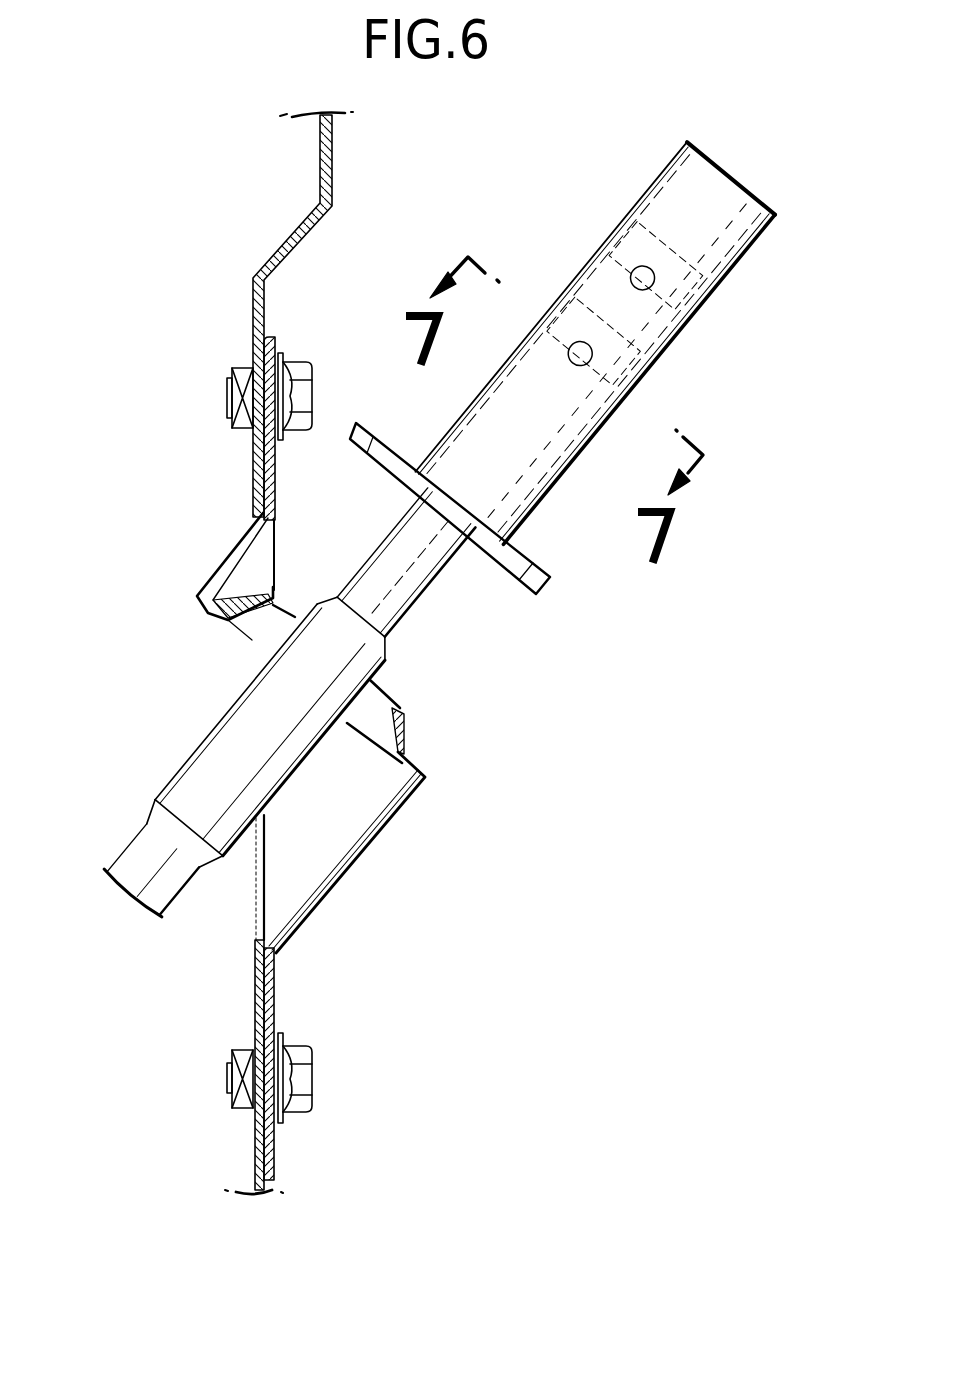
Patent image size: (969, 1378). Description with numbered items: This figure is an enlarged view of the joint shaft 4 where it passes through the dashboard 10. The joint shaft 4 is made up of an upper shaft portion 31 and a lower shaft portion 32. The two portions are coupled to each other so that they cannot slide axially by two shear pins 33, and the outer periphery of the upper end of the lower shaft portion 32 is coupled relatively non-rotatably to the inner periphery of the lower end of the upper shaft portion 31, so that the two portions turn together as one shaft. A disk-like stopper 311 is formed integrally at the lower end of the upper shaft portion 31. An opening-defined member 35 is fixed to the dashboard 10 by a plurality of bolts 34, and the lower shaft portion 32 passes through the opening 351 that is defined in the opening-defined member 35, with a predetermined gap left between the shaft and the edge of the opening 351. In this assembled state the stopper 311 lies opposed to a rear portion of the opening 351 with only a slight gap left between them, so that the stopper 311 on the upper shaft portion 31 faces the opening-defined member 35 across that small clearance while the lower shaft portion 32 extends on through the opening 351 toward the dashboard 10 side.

The joint shaft 4 is at (452, 531).
The dashboard 10 is at (302, 243).
The upper shaft portion 31 is at (683, 338).
The stopper 311 is at (528, 564).
The lower shaft portion 32 is at (407, 578).
The shear pins 33 is at (651, 271).
The bolts 34 is at (297, 373).
The opening-defined member 35 is at (204, 560).
The opening 351 is at (282, 596).